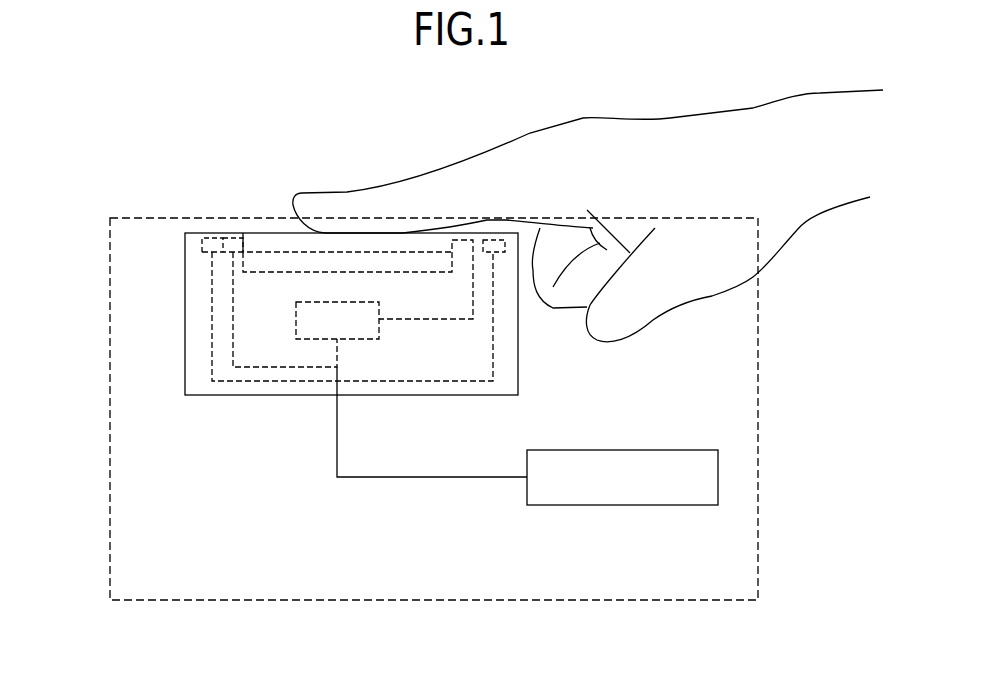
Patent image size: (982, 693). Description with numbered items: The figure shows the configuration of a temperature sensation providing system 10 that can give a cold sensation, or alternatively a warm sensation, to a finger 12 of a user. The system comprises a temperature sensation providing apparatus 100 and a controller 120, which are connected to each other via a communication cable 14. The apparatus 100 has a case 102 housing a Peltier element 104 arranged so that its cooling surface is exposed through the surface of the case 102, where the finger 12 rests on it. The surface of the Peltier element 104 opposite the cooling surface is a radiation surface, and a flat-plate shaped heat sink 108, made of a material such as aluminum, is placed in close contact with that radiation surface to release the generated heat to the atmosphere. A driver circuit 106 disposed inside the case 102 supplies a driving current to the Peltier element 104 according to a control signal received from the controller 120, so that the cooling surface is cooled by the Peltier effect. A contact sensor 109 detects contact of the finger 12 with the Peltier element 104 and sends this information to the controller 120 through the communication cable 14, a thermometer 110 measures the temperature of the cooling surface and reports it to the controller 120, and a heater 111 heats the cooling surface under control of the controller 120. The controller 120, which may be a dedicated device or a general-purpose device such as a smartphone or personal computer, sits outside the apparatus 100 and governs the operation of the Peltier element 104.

The temperature sensation providing system 10 is at (110, 378).
The finger 12 is at (345, 193).
The communication cable 14 is at (393, 477).
The temperature sensation providing apparatus 100 is at (203, 401).
The case 102 is at (518, 357).
The Peltier element 104 is at (278, 243).
The driver circuit 106 is at (368, 339).
The heat sink 108 is at (267, 272).
The contact sensor 109 is at (213, 240).
The thermometer 110 is at (235, 240).
The heater 111 is at (493, 240).
The controller 120 is at (633, 449).